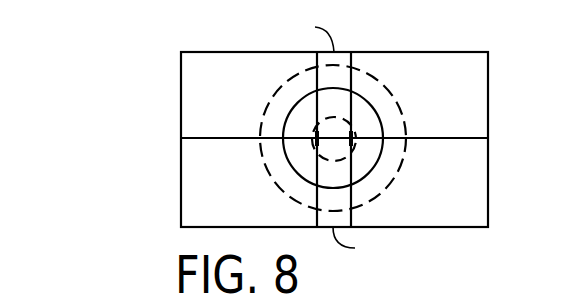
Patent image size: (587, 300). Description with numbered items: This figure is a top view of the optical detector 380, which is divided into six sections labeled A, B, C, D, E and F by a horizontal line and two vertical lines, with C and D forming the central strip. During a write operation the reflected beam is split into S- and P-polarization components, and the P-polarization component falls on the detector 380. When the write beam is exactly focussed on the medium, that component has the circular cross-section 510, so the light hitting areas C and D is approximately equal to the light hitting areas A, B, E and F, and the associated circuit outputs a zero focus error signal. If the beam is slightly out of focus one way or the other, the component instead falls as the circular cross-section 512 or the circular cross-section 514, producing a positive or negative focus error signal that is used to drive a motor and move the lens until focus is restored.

The detector 380 is at (122, 158).
The circular cross-section 510 is at (381, 83).
The circular cross-section 512 is at (406, 124).
The circular cross-section 514 is at (358, 150).